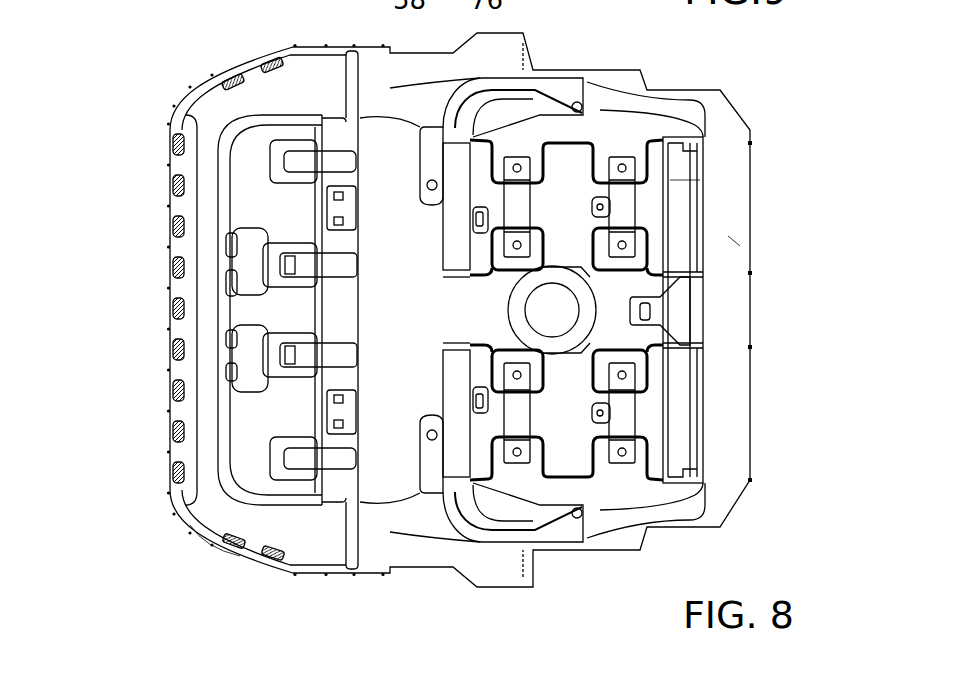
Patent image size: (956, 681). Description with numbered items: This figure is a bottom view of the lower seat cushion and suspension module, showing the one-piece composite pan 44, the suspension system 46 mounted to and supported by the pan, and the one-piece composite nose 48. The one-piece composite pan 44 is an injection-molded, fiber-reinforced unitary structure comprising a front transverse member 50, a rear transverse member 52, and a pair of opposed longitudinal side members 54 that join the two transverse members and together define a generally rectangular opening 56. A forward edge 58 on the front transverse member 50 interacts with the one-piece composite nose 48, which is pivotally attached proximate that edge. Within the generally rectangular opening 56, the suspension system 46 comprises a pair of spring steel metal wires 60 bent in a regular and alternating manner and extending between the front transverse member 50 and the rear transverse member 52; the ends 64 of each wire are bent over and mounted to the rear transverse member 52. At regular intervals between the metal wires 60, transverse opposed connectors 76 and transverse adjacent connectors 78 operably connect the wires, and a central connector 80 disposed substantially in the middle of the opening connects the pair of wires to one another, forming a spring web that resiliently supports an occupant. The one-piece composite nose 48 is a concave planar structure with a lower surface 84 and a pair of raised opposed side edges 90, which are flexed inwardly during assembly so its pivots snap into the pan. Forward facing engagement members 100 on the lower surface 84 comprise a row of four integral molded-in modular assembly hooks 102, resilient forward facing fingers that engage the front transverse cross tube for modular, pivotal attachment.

The one-piece composite pan 44 is at (733, 383).
The suspension system 46 is at (677, 180).
The one-piece composite nose 48 is at (222, 103).
The front transverse member 50 is at (432, 318).
The rear transverse member 52 is at (730, 240).
The opposed longitudinal side members 54 is at (603, 76).
The generally rectangular opening 56 is at (697, 313).
The forward edge 58 is at (357, 483).
The metal wires 60 is at (648, 280).
The ends of the metal wires 64 is at (752, 143).
The transverse opposed connectors 76 is at (443, 250).
The transverse adjacent connectors 78 is at (612, 195).
The central connector 80 is at (592, 307).
The lower surface 84 is at (225, 520).
The raised opposed side edges 90 is at (290, 50).
The forward facing engagement members 100 is at (350, 454).
The integral molded-in modular assembly hooks 102 is at (337, 160).